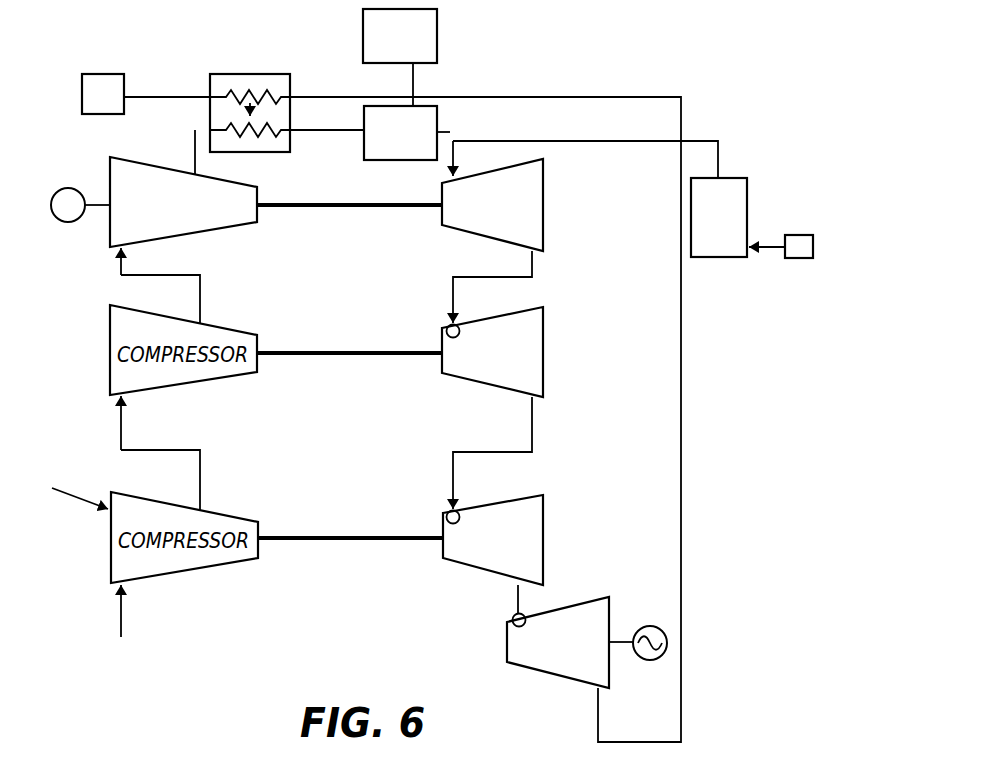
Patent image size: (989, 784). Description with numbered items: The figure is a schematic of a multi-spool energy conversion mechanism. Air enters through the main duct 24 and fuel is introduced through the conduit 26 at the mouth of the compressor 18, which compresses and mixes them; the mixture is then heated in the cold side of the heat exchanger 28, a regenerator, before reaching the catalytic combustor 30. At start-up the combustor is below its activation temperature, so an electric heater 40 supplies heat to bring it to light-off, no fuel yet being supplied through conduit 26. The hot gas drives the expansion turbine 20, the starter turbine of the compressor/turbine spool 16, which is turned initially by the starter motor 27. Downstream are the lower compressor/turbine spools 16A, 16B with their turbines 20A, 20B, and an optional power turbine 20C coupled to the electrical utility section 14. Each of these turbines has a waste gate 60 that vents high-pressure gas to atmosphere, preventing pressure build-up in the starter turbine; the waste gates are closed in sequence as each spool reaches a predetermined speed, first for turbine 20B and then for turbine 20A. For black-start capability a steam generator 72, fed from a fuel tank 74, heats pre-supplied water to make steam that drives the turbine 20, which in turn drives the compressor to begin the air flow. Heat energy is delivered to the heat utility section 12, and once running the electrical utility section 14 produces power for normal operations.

The heat utility section 12 is at (96, 74).
The electrical utility section 14 is at (667, 624).
The compressor/turbine spool 16 is at (302, 212).
The lower compressor/turbine spool 16A is at (287, 546).
The lower compressor/turbine spool 16B is at (287, 360).
The compressor 18 is at (110, 172).
The expansion turbine 20 is at (543, 180).
The turbine 20A is at (543, 513).
The turbine 20B is at (543, 328).
The power turbine 20C is at (555, 677).
The main duct 24 is at (121, 605).
The conduit 26 is at (70, 494).
The starter motor 27 is at (57, 218).
The heat exchanger 28 is at (290, 88).
The catalytic combustor 30 is at (437, 118).
The electric heater 40 is at (437, 50).
The waste gate 60 is at (447, 325).
The steam generator 72 is at (747, 195).
The tank 74 is at (795, 258).